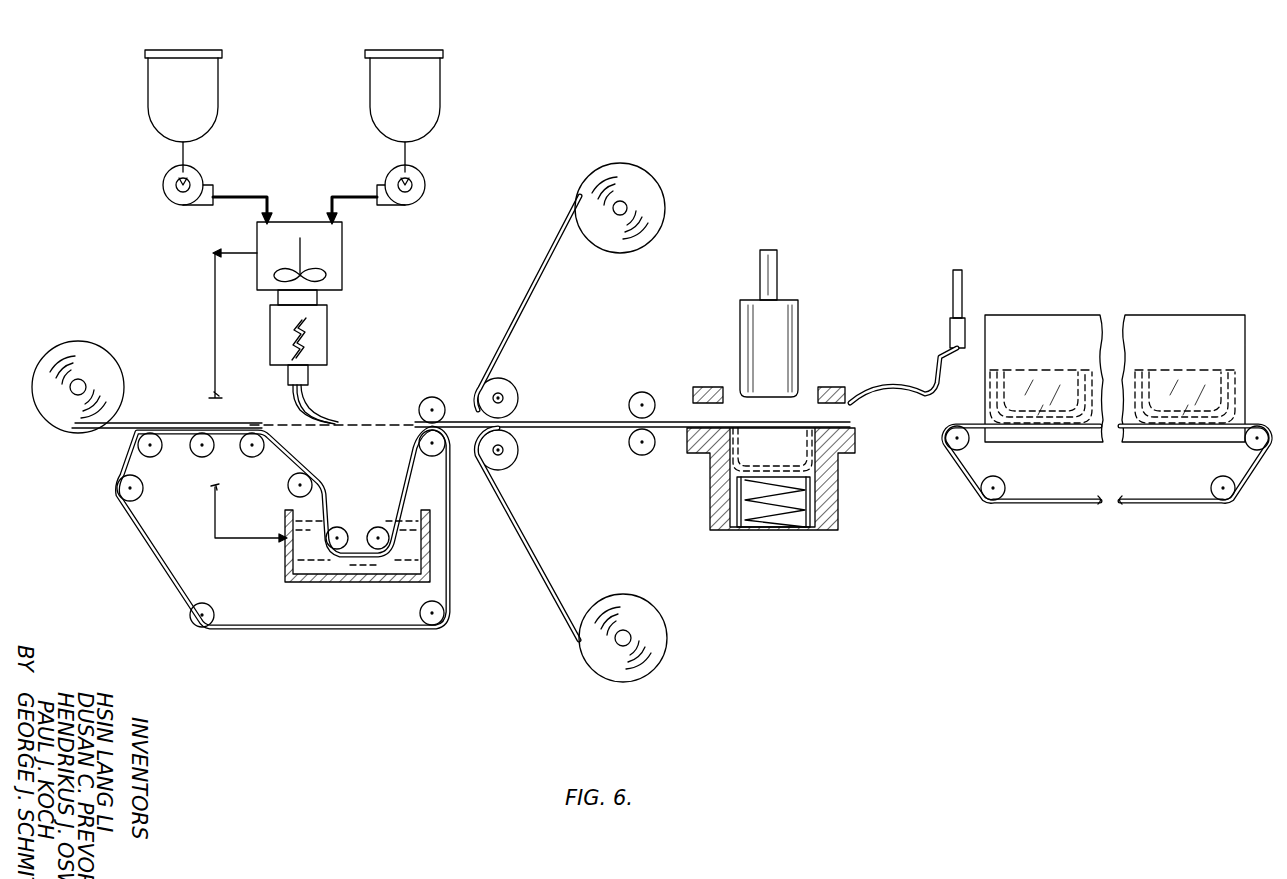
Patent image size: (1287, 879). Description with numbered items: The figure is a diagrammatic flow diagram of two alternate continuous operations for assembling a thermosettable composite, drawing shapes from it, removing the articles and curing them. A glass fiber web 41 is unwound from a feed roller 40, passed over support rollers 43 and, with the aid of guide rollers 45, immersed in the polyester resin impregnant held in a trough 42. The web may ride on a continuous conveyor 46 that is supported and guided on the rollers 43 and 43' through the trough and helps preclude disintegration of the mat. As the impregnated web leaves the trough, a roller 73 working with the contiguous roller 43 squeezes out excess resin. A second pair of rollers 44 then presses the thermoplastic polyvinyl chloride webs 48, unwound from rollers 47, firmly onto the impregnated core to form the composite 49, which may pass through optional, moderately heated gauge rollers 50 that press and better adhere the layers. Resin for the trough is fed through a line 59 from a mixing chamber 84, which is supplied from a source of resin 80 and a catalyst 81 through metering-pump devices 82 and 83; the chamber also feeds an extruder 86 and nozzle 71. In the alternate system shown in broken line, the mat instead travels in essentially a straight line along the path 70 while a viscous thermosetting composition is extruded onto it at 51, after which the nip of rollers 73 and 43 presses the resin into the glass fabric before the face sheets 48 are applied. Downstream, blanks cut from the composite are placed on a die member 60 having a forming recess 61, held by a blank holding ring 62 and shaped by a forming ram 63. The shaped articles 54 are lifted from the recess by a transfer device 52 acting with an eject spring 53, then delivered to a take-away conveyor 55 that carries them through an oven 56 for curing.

The feed roller 40 is at (80, 340).
The glass fiber web 41 is at (180, 424).
The trough 42 is at (358, 580).
The support rollers 43 is at (313, 471).
The rollers 43' is at (301, 564).
The second pair of rollers 44 is at (512, 385).
The guide rollers 45 is at (375, 527).
The continuous conveyor 46 is at (345, 630).
The roller 47 is at (645, 173).
The thermoplastic webs 48 is at (535, 281).
The composite 49 is at (598, 421).
The gauge rollers 50 is at (642, 395).
The extrusion point 51 is at (295, 401).
The transfer device 52 is at (950, 340).
The eject spring 53 is at (780, 520).
The shaped articles 54 is at (808, 463).
The take-away conveyor 55 is at (965, 428).
The oven 56 is at (1073, 315).
The line 59 is at (213, 301).
The die member 60 is at (833, 505).
The forming recess 61 is at (808, 522).
The blank holding ring 62 is at (713, 387).
The forming ram 63 is at (800, 345).
The broken line 70 is at (386, 424).
The nozzle 71 is at (308, 376).
The roller 73 is at (432, 398).
The source of resin 80 is at (148, 96).
The catalyst 81 is at (438, 96).
The metering-pump device 82 is at (164, 193).
The metering-pump device 83 is at (426, 189).
The mixing chamber 84 is at (342, 245).
The extruder 86 is at (327, 327).